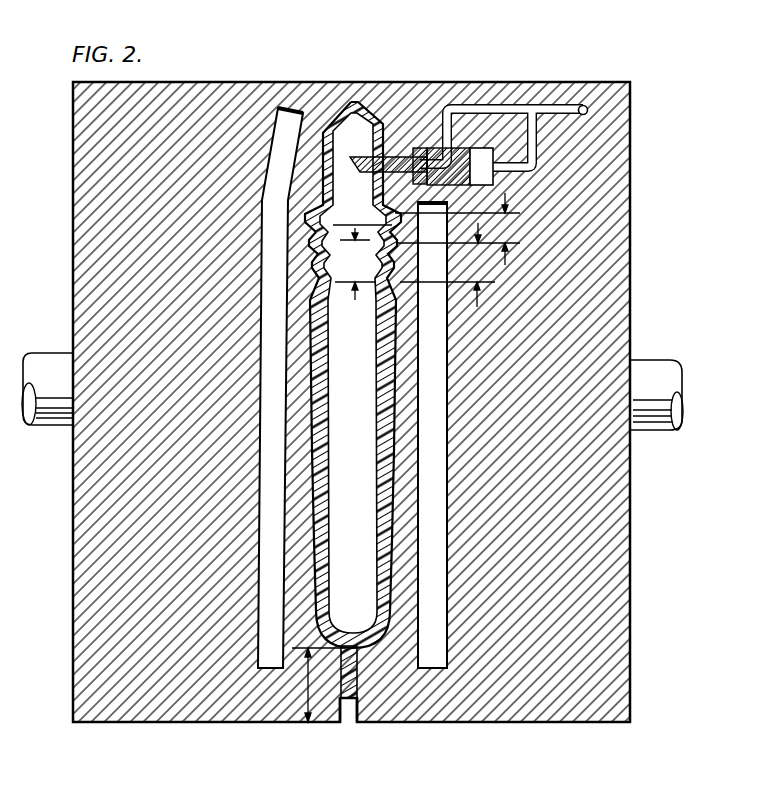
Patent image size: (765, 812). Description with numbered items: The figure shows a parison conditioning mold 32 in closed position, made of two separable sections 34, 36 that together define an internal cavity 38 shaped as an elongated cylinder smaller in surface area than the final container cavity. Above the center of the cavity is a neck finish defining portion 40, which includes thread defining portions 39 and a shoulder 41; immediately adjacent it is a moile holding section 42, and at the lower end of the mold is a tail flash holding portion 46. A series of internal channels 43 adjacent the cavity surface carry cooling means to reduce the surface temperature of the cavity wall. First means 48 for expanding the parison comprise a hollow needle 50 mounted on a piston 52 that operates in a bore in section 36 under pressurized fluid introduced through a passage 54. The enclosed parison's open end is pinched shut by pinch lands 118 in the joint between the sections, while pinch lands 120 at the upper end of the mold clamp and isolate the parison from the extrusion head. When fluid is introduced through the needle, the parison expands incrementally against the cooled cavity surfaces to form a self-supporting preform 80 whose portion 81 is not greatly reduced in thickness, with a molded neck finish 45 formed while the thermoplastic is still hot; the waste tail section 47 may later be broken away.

The parison conditioning mold 32 is at (684, 177).
The separable mold section 34 is at (316, 93).
The separable mold section 36 is at (493, 94).
The internal cavity 38 is at (358, 565).
The thread defining portions 39 is at (316, 262).
The neck finish defining portion 40 is at (454, 275).
The shoulder 41 is at (313, 278).
The moile holding section 42 is at (457, 219).
The internal channels 43 is at (288, 108).
The molded neck finish 45 is at (362, 262).
The tail flash holding portion 46 is at (318, 685).
The tail section 47 is at (346, 700).
The first means for expanding parison 48 is at (593, 165).
The hollow needle 50 is at (399, 156).
The piston 52 is at (433, 148).
The passage 54 is at (584, 105).
The preform 80 is at (380, 525).
The portion of preform 81 is at (445, 327).
The pinch lands 118 is at (356, 652).
The pinch lands 120 is at (354, 332).